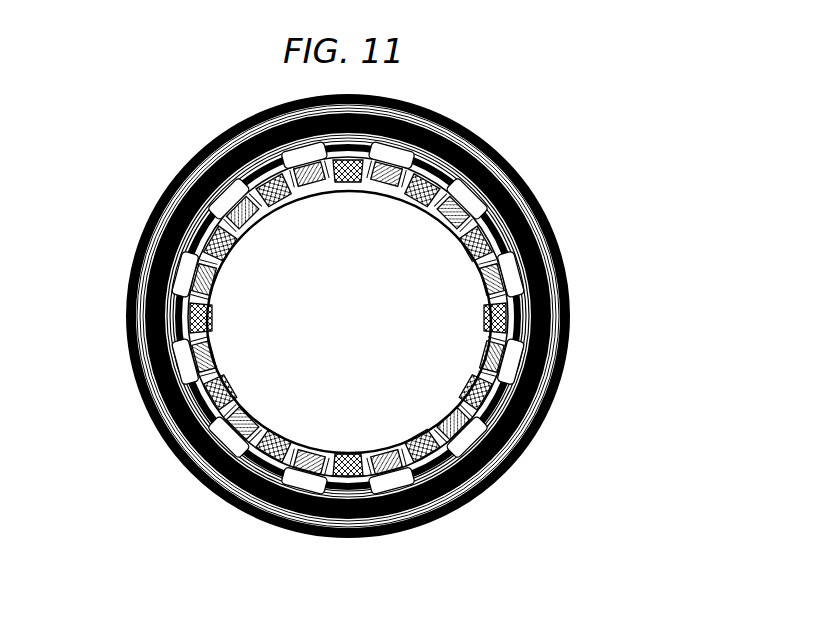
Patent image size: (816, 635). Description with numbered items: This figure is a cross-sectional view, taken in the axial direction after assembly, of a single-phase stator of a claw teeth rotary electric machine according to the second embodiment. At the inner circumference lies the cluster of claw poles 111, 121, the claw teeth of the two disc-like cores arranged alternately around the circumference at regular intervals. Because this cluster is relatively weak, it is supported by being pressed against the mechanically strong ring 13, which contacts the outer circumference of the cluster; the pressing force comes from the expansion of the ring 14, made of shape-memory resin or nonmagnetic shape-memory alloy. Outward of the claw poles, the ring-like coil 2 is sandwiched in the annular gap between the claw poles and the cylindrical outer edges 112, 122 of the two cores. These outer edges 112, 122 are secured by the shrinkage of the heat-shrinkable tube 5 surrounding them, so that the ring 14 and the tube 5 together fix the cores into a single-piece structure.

The heat-shrinkable tube 5 is at (473, 140).
The ring-like coil 2 is at (538, 217).
The outer edge 112 is at (553, 247).
The outer edge 122 is at (408, 316).
The claw pole 111 is at (203, 298).
The ring 13 is at (378, 189).
The ring 14 is at (478, 277).
The claw pole 121 is at (211, 347).